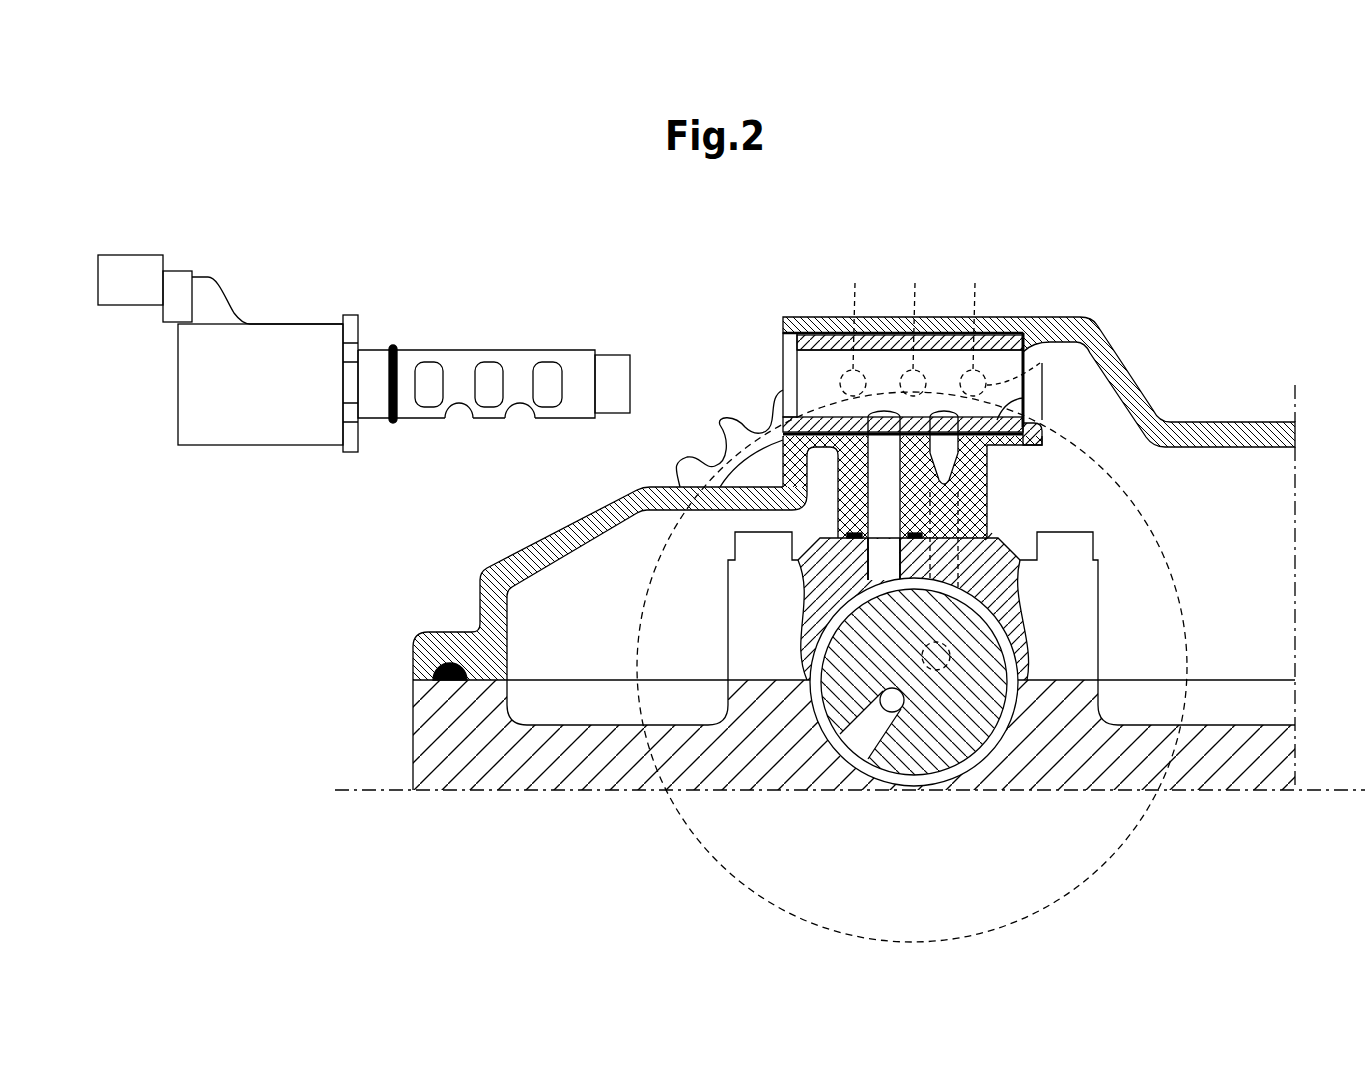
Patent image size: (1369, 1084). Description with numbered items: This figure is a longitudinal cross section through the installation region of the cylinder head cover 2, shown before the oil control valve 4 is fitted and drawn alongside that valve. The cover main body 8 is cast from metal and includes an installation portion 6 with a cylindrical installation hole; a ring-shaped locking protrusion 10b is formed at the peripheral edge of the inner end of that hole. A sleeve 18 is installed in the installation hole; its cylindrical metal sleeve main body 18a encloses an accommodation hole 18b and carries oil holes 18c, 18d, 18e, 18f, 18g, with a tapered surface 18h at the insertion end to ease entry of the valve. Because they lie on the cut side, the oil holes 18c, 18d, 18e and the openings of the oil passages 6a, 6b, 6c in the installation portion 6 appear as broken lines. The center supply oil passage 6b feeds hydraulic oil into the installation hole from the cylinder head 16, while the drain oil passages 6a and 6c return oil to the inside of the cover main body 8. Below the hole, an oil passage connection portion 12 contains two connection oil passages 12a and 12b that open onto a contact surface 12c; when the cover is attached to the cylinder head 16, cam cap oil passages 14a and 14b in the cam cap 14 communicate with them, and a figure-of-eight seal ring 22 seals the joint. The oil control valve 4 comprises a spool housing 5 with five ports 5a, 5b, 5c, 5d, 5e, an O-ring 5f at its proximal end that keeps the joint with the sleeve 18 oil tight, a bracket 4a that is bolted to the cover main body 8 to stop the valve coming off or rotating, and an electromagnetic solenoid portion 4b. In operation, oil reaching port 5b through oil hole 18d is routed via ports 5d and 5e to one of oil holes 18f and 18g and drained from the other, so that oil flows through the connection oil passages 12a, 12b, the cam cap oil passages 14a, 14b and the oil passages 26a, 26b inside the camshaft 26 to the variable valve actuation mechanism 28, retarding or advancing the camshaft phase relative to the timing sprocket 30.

The cylinder head cover 2 is at (850, 599).
The oil control valve 4 is at (233, 371).
The bracket 4a is at (352, 317).
The electromagnetic solenoid portion 4b is at (242, 437).
The spool housing 5 is at (494, 376).
The port 5a is at (420, 372).
The port 5b is at (477, 372).
The port 5c is at (537, 372).
The port 5d is at (461, 404).
The port 5e is at (521, 404).
The O-ring 5f is at (392, 345).
The installation portion 6 is at (915, 313).
The drain oil passage 6a is at (855, 313).
The supply oil passage 6b is at (914, 313).
The drain oil passage 6c is at (1007, 347).
The cover main body 8 is at (1039, 382).
The locking protrusion 10b is at (1032, 418).
The oil passage connection portion 12 is at (917, 526).
The connection oil passage 12a is at (880, 516).
The connection oil passage 12b is at (948, 478).
The contact surface 12c is at (987, 491).
The cam cap 14 is at (938, 606).
The cam cap oil passage 14a is at (801, 603).
The cam cap oil passage 14b is at (947, 560).
The cylinder head 16 is at (1262, 722).
The sleeve 18 is at (912, 345).
The sleeve main body 18a is at (888, 345).
The accommodation hole 18b is at (808, 358).
The oil hole 18c is at (845, 381).
The oil hole 18d is at (900, 382).
The oil hole 18e is at (1042, 367).
The oil hole 18f is at (778, 402).
The oil hole 18g is at (1023, 398).
The tapered surface 18h is at (789, 362).
The seal ring 22 is at (913, 542).
The camshaft 26 is at (946, 704).
The oil passage 26a is at (862, 742).
The oil passage 26b is at (972, 650).
The variable valve actuation mechanism 28 is at (1160, 543).
The timing sprocket 30 is at (677, 459).